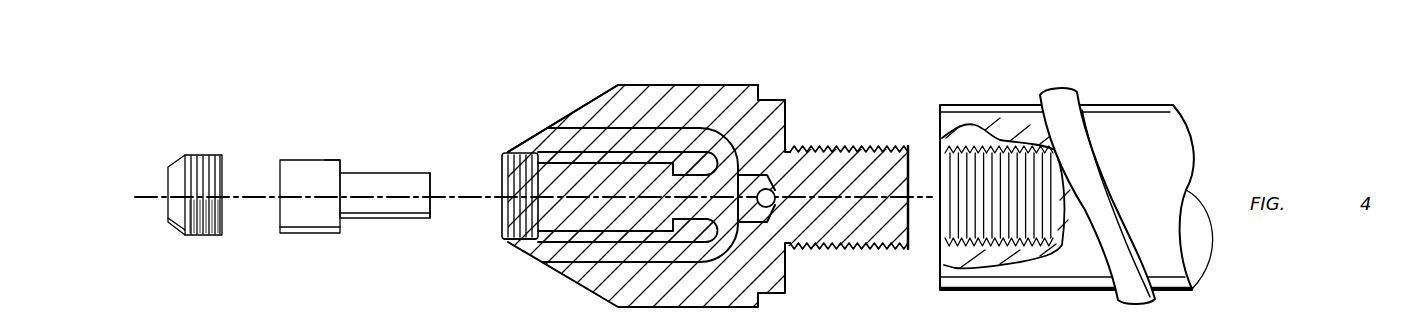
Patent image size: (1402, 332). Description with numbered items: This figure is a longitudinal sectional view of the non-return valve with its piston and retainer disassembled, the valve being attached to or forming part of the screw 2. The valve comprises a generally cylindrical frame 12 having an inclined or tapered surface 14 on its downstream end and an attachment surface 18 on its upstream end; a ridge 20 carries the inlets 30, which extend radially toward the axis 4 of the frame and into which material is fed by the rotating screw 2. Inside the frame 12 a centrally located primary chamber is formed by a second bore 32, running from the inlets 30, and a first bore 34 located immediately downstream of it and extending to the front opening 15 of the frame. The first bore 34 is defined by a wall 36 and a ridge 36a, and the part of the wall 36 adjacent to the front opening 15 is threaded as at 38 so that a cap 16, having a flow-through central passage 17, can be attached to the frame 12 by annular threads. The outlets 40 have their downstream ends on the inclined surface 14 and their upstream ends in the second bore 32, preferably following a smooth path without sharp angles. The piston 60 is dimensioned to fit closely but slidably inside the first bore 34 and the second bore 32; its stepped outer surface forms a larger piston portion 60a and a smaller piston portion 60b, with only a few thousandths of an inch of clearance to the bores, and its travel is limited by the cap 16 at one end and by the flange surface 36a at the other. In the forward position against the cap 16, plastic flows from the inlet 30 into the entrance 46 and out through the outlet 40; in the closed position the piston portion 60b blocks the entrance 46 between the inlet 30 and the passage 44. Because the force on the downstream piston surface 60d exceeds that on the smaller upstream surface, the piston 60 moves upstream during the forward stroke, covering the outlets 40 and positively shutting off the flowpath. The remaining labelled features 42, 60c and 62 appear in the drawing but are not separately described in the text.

The screw 2 is at (1182, 290).
The axis 4 is at (243, 168).
The frame 12 is at (683, 85).
The inclined surface 14 is at (584, 106).
The front opening 15 is at (502, 158).
The cap 16 is at (175, 232).
The central passage 17 is at (168, 173).
The attachment surface 18 is at (842, 249).
The ridge 20 is at (772, 100).
The inlet 30 is at (776, 195).
The second bore 32 is at (682, 205).
The first bore 34 is at (596, 187).
The wall 36 is at (548, 221).
The ridge 36a is at (668, 223).
The threads 38 is at (502, 229).
The outlet 40 is at (548, 133).
The lower passage 42 is at (545, 257).
The passage 44 is at (700, 140).
The entrance 46 is at (723, 227).
The piston 60 is at (357, 190).
The piston portion 60a is at (306, 234).
The piston portion 60b is at (389, 219).
The stem end 60c is at (432, 181).
The downstream piston surface 60d is at (280, 229).
The head shoulder 62 is at (341, 164).